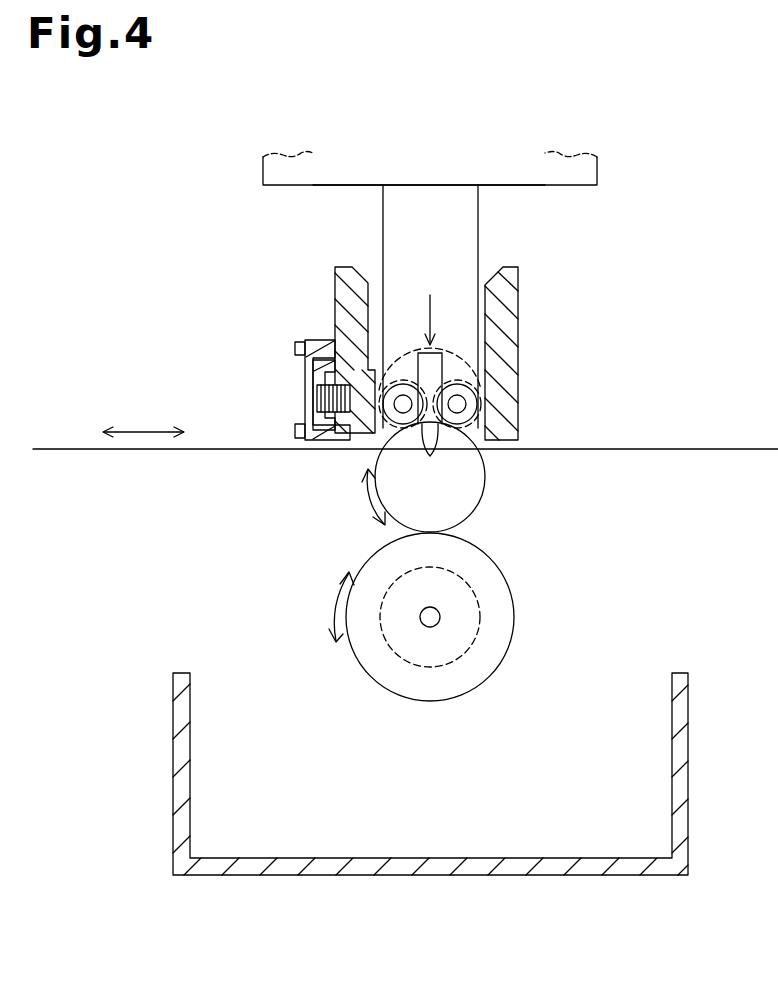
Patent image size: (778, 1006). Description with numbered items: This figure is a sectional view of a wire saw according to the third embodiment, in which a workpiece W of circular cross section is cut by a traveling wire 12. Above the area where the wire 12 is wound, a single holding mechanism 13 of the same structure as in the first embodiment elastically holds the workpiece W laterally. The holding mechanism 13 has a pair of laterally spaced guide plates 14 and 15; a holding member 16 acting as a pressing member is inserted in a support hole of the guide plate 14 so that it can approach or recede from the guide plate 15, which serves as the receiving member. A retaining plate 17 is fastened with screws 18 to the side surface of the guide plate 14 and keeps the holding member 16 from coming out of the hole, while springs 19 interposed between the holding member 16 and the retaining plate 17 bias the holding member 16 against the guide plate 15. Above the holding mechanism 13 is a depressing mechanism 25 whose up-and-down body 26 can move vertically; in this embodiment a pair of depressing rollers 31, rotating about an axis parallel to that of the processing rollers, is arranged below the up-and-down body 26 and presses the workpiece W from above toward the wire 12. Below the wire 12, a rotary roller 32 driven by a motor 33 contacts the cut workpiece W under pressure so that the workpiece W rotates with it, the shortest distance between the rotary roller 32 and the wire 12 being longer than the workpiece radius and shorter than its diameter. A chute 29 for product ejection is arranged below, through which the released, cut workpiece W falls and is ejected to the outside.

The wire 12 is at (70, 449).
The holding mechanism 13 is at (331, 333).
The guide plate 14 is at (335, 302).
The guide plate 15 is at (519, 320).
The holding member 16 is at (316, 366).
The retaining plate 17 is at (310, 342).
The screws 18 is at (295, 352).
The springs 19 is at (314, 403).
The depressing mechanism 25 is at (380, 211).
The up-and-down body 26 is at (512, 175).
The chute 29 is at (172, 777).
The depressing rollers 31 is at (430, 390).
The rotary roller 32 is at (502, 585).
The motor 33 is at (480, 618).
The workpiece W is at (477, 487).